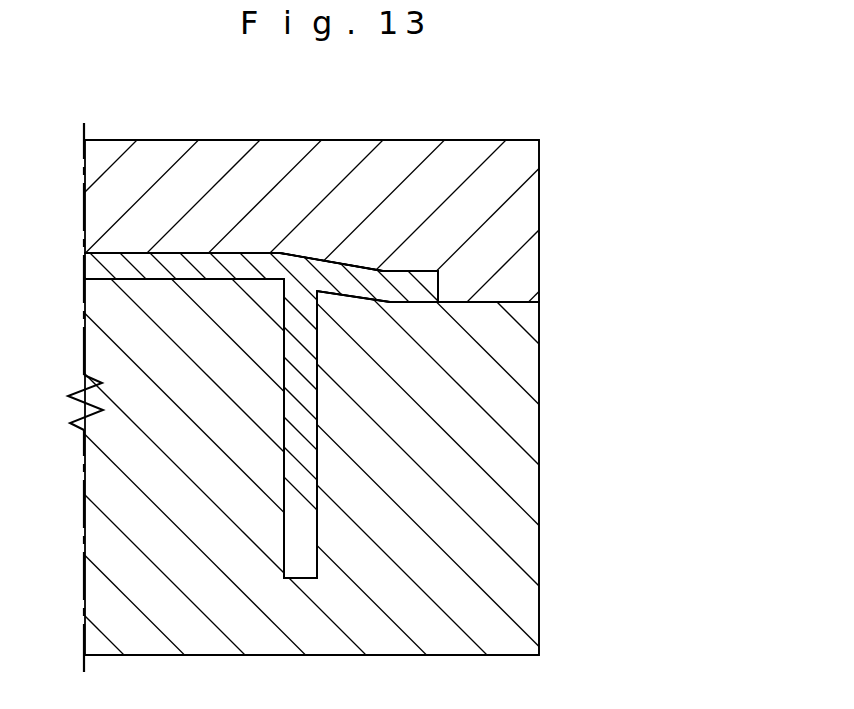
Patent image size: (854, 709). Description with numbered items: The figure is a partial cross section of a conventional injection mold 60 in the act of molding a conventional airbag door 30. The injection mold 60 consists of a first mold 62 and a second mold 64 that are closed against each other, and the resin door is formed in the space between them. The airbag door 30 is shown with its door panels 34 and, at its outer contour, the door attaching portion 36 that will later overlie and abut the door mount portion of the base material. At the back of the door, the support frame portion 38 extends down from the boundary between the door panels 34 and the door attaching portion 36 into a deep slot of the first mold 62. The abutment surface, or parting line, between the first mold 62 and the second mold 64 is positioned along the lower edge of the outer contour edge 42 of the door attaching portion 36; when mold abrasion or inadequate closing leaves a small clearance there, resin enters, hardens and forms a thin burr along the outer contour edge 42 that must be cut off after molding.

The airbag door 30 is at (198, 252).
The door panels 34 is at (140, 263).
The door attaching portion 36 is at (403, 295).
The support frame portion 38 is at (304, 517).
The outer contour edge 42 is at (440, 298).
The injection mold 60 is at (645, 240).
The first mold 62 is at (540, 542).
The second mold 64 is at (540, 212).